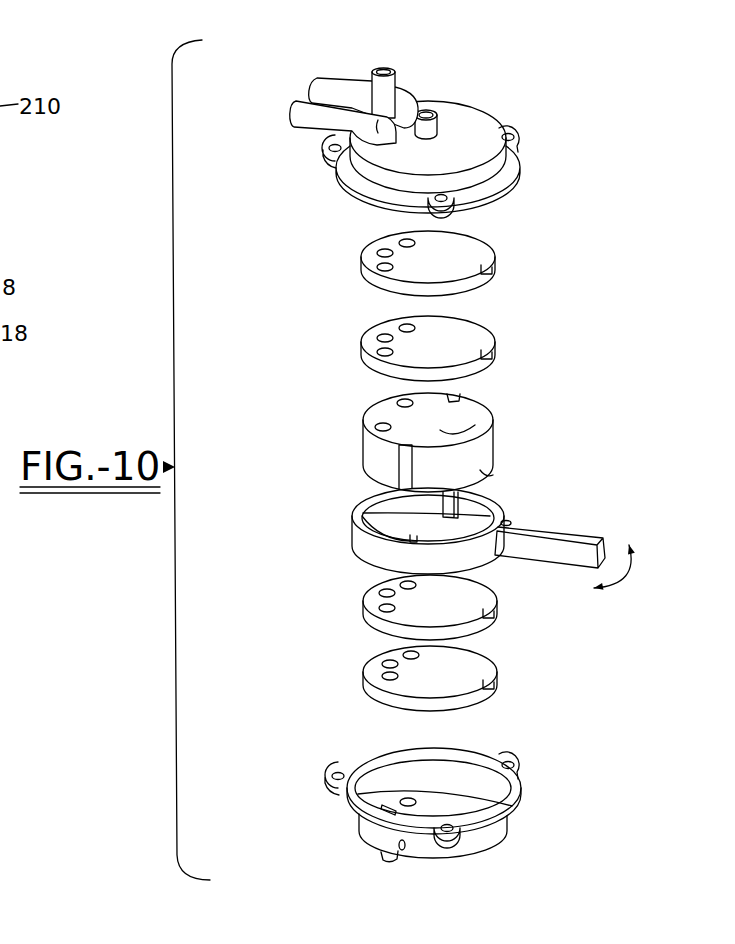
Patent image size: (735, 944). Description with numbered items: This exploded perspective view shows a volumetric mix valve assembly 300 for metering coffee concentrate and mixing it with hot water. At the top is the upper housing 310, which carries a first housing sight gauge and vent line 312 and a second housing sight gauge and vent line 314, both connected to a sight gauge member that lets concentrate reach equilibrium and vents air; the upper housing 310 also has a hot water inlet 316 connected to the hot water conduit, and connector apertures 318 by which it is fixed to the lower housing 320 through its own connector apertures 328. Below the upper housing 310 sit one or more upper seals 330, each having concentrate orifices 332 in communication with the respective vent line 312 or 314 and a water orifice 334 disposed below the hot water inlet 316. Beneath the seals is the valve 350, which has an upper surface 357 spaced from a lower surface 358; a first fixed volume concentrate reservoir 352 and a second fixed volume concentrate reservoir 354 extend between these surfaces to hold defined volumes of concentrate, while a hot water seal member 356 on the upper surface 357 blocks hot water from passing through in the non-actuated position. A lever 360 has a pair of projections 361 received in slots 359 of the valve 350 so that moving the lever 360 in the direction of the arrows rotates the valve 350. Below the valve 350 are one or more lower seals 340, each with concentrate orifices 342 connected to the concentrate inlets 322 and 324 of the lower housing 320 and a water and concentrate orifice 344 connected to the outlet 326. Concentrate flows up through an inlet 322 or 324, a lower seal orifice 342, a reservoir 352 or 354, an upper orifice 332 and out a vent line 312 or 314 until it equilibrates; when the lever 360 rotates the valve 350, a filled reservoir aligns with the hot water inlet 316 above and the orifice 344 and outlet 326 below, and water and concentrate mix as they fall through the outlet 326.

The volumetric mix valve assembly 300 is at (577, 158).
The upper housing 310 is at (463, 100).
The first housing sight gauge and vent line 312 is at (297, 110).
The second housing sight gauge and vent line 314 is at (318, 80).
The hot water inlet 316 is at (390, 83).
The connector aperture 318 is at (323, 145).
The upper seal 330 is at (480, 287).
The concentrate orifice 332 is at (405, 240).
The water orifice 334 is at (380, 252).
The valve 350 is at (495, 442).
The first fixed volume concentrate reservoir 352 is at (380, 427).
The second fixed volume concentrate reservoir 354 is at (400, 403).
The hot water seal member 356 is at (472, 408).
The upper surface 357 is at (475, 425).
The lower surface 358 is at (487, 478).
The slot 359 is at (405, 467).
The lever 360 is at (597, 530).
The projection 361 is at (410, 537).
The lower seal 340 is at (480, 628).
The concentrate orifice 342 is at (405, 583).
The water and concentrate orifice 344 is at (383, 592).
The lower housing 320 is at (527, 793).
The concentrate inlet 322 is at (398, 844).
The concentrate inlet 324 is at (408, 797).
The outlet 326 is at (385, 808).
The connector aperture 328 is at (338, 768).